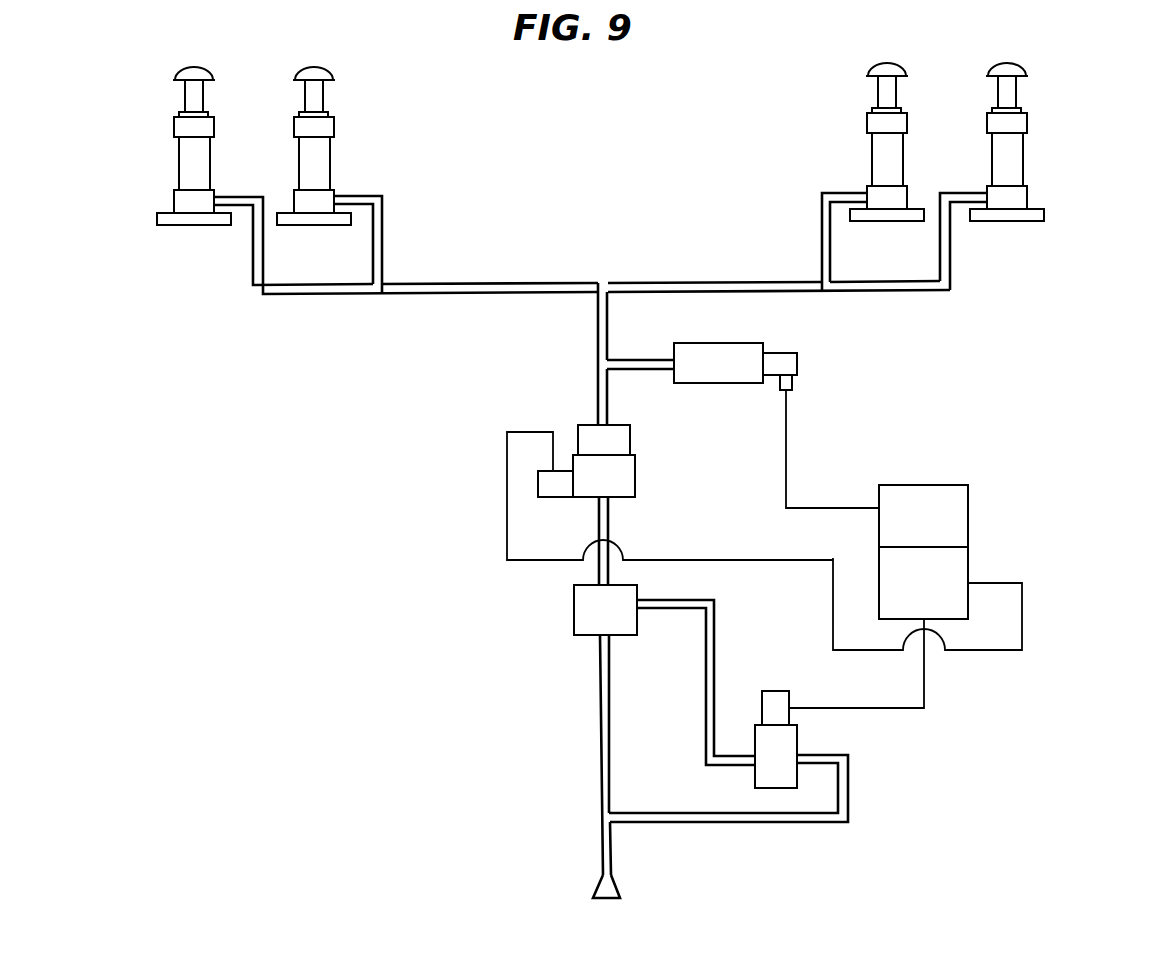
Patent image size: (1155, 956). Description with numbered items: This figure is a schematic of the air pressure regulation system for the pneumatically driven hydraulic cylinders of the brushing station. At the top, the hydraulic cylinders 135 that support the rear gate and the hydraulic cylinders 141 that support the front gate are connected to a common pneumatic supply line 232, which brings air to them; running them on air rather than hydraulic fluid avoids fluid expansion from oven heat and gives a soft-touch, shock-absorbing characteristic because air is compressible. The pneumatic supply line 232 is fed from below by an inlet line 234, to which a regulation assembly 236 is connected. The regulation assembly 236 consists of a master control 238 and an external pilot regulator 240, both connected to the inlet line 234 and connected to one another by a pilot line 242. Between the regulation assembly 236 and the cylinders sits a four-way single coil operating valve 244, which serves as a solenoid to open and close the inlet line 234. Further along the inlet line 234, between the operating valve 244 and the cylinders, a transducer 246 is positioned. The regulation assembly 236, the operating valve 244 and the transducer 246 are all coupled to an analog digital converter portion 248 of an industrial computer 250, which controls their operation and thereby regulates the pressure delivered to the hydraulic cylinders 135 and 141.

The hydraulic cylinder 141 is at (183, 160).
The hydraulic cylinder 135 is at (1017, 158).
The pneumatic supply line 232 is at (480, 283).
The inlet line 234 is at (603, 850).
The regulation assembly 236 is at (945, 410).
The master control 238 is at (788, 741).
The external pilot regulator 240 is at (583, 613).
The pilot line 242 is at (713, 643).
The 4-way single coil operating valve 244 is at (628, 478).
The transducer 246 is at (728, 353).
The analog digital converter portion 248 is at (947, 578).
The industrial computer 250 is at (1030, 500).